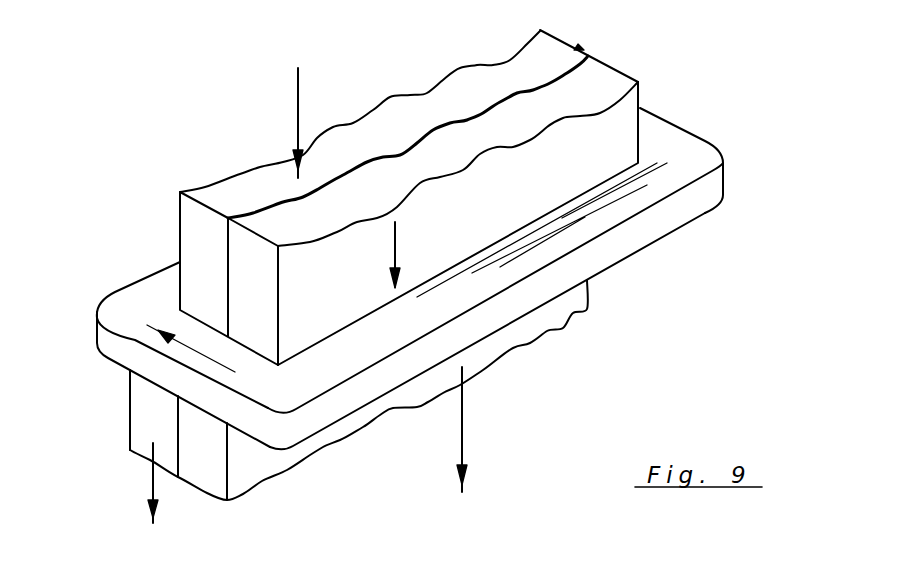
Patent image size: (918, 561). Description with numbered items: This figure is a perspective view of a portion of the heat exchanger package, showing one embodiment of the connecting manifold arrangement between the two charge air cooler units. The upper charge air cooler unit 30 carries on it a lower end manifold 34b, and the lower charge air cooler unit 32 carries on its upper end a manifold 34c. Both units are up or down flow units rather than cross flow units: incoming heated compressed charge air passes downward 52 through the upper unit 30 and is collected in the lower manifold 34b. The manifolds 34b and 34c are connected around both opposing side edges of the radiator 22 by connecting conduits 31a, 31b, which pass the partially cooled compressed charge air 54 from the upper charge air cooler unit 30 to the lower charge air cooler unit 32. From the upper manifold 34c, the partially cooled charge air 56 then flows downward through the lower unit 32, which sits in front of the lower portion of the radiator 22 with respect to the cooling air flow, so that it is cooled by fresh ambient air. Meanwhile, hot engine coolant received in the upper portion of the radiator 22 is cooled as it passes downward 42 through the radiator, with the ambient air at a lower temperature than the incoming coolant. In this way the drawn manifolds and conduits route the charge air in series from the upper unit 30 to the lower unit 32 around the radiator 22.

The radiator 22 is at (186, 210).
The upper charge air cooler unit 30 is at (627, 117).
The connecting conduit 31a is at (157, 378).
The connecting conduit 31b is at (697, 137).
The lower charge air cooler unit 32 is at (140, 435).
The lower manifold 34b is at (637, 238).
The upper manifold 34c is at (136, 294).
The downward coolant flow 42 is at (298, 103).
The downward charge air flow 52 is at (395, 237).
The partially cooled compressed charge air 54 is at (123, 332).
The partially cooled charge air 56 is at (148, 505).